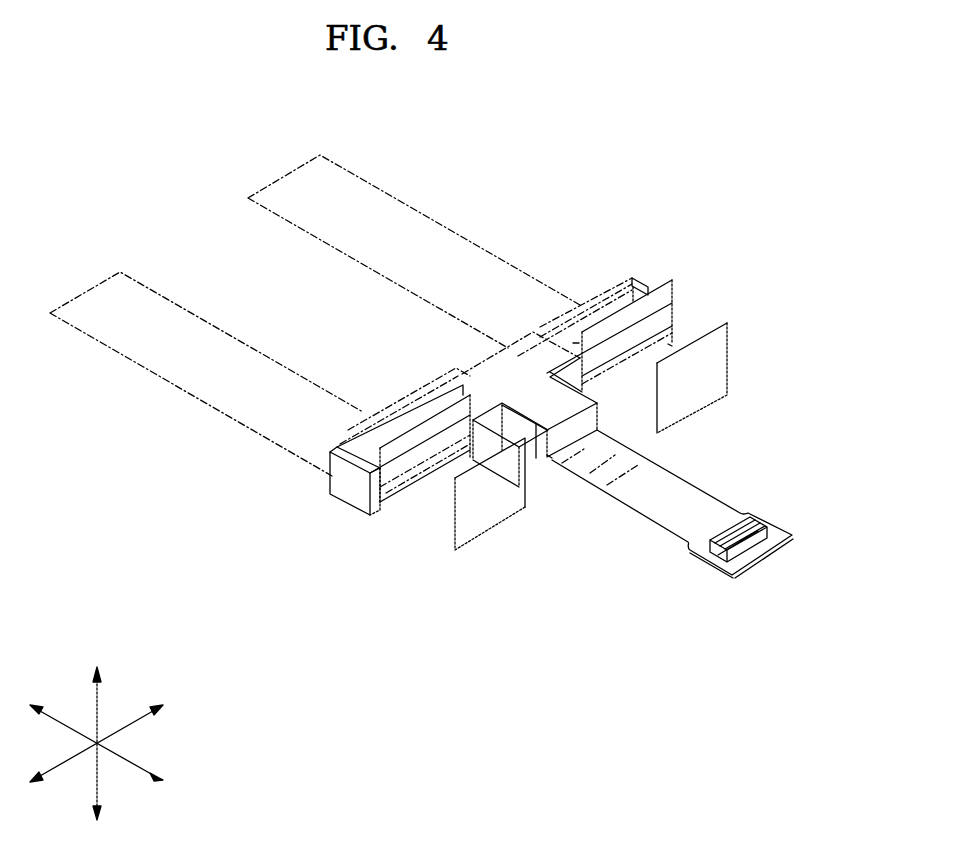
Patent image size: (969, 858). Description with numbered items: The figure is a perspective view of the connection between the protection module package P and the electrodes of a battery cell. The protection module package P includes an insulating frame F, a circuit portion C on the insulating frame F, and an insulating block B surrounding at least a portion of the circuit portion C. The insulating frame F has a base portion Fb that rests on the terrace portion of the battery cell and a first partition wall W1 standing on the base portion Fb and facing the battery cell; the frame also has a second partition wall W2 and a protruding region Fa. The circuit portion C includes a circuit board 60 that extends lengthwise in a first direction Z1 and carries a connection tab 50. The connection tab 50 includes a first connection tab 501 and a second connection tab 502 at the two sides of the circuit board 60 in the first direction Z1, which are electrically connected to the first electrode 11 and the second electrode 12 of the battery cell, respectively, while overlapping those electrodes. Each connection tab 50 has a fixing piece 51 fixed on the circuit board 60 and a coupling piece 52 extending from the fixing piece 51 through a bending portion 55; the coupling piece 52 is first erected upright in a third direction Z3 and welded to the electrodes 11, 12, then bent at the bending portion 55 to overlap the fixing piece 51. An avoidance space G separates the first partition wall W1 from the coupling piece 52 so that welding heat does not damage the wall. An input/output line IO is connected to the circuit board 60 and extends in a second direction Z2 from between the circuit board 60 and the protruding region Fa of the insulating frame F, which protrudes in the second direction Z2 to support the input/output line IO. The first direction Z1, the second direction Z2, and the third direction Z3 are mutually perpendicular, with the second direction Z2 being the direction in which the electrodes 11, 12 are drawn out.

The protection module package P is at (442, 620).
The insulating block B is at (525, 357).
The circuit portion C is at (600, 282).
The avoidance space G is at (573, 343).
The insulating frame F is at (313, 348).
The first partition wall W1 is at (360, 437).
The second width W2 is at (345, 452).
The connection tab 50 is at (403, 462).
The first connection tab 501 is at (403, 470).
The second connection tab 502 is at (662, 297).
The circuit board 60 is at (495, 427).
The fixing piece 51 is at (370, 465).
The bending portion 55 is at (382, 497).
The coupling piece 52 is at (408, 467).
The first electrode 11 is at (492, 518).
The second electrode 12 is at (690, 403).
The protruding region Fa is at (551, 463).
The base portion Fb is at (670, 342).
The input/output line IO is at (713, 517).
The first direction Z1 is at (113, 733).
The second direction Z2 is at (113, 752).
The third direction Z3 is at (97, 730).